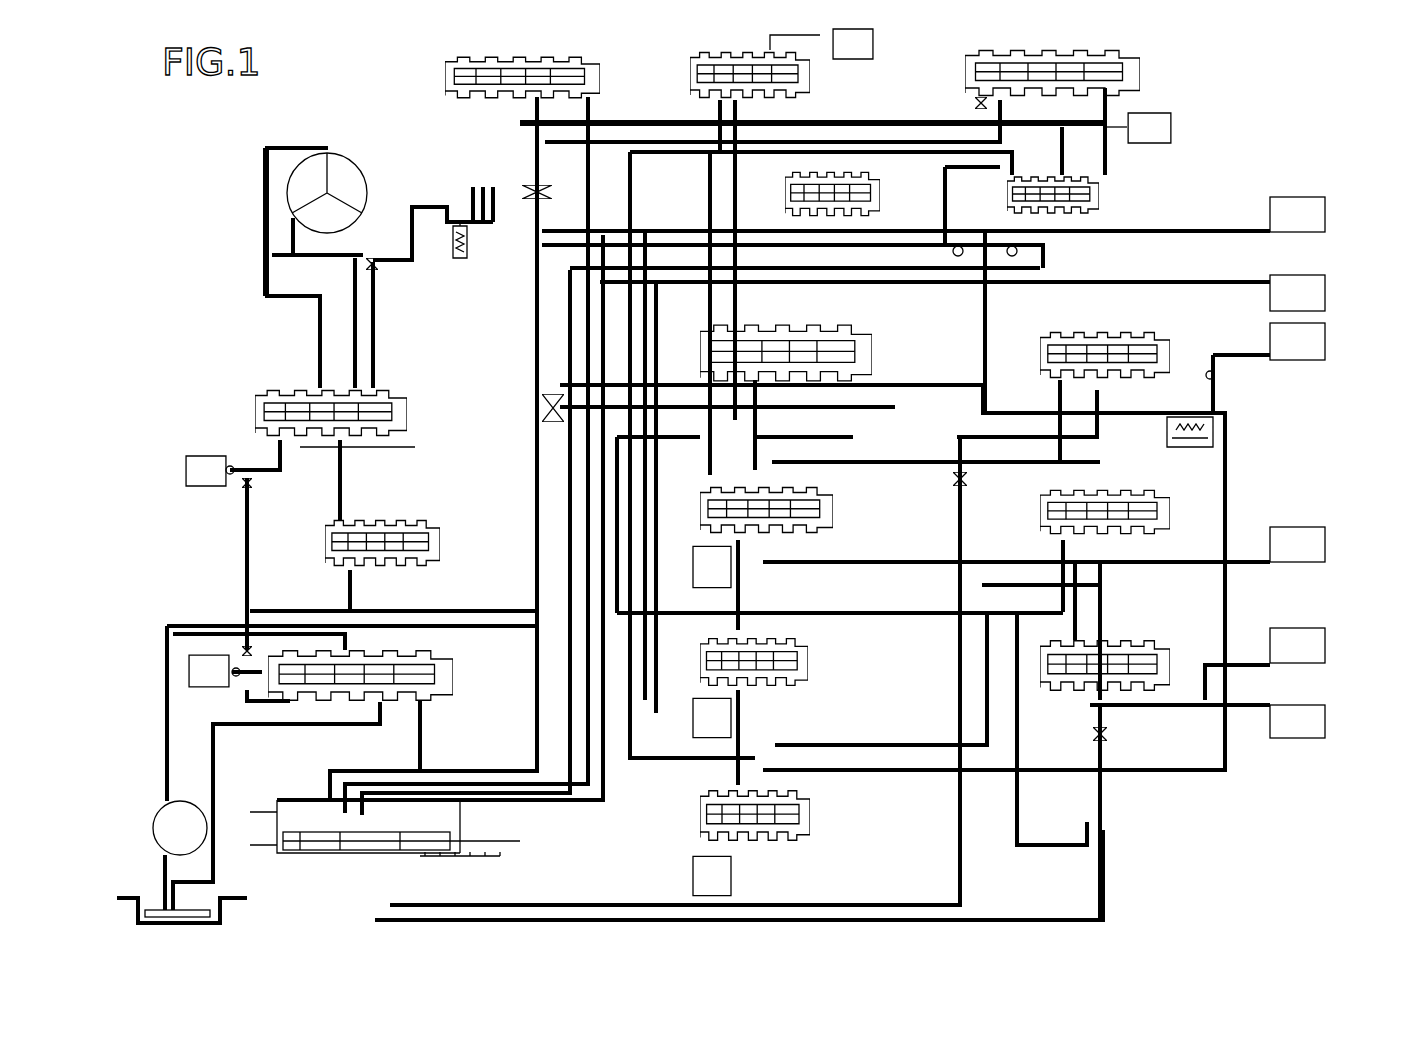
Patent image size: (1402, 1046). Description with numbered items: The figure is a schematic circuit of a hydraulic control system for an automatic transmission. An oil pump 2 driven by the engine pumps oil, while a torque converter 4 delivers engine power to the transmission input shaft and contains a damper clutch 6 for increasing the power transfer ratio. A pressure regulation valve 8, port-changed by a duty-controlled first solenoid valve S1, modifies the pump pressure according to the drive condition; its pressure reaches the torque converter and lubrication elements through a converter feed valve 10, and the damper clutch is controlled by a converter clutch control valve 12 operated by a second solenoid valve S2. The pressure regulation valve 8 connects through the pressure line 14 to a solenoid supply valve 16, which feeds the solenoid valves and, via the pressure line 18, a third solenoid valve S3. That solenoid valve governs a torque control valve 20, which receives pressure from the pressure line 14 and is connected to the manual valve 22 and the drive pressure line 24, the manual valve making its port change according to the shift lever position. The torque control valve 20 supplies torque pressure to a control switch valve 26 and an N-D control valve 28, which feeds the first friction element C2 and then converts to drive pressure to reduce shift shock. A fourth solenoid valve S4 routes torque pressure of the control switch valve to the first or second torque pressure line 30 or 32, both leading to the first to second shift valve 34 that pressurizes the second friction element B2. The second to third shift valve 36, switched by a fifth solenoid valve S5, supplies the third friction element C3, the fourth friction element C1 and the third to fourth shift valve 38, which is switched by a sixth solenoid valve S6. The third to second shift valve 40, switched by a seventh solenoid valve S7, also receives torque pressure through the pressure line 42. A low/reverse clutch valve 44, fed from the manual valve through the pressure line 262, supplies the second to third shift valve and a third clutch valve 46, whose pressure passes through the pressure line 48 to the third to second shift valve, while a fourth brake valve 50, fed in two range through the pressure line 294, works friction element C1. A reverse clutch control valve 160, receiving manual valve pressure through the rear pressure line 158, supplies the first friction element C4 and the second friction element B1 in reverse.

The oil pump 2 is at (153, 828).
The torque converter 4 is at (352, 155).
The damper clutch 6 is at (266, 184).
The pressure regulation valve 8 is at (465, 674).
The converter feed valve 10 is at (445, 538).
The converter clutch control valve 12 is at (420, 414).
The pressure line 14 is at (535, 298).
The solenoid supply valve 16 is at (606, 74).
The pressure line 18 is at (908, 120).
The torque control valve 20 is at (1150, 74).
The manual valve 22 is at (332, 860).
The drive pressure line 24 is at (590, 790).
The control switch valve 26 is at (820, 74).
The N-D control valve 28 is at (875, 192).
The first torque pressure line 30 is at (708, 163).
The second torque pressure line 32 is at (732, 196).
The first to second shift valve 34 is at (878, 347).
The second to third shift valve 36 is at (838, 508).
The third to fourth shift valve 38 is at (815, 658).
The third to second shift valve 40 is at (815, 816).
The pressure line 42 is at (660, 760).
The low/reverse clutch valve 44 is at (1178, 325).
The third clutch valve 46 is at (1180, 504).
The pressure line 48 is at (1082, 590).
The fourth brake valve 50 is at (1178, 630).
The rear pressure line 158 is at (1043, 256).
The reverse clutch control valve 160 is at (1108, 194).
The pressure line 262 is at (958, 448).
The pressure line 294 is at (1040, 918).
The first solenoid valve S1 is at (214, 671).
The second solenoid valve S2 is at (210, 471).
The third solenoid valve S3 is at (1138, 137).
The fourth solenoid valve S4 is at (853, 44).
The fifth solenoid valve S5 is at (712, 566).
The sixth solenoid valve S6 is at (712, 717).
The seventh solenoid valve S7 is at (712, 875).
The fourth friction element C1 is at (1325, 720).
The first friction element C2 is at (1325, 294).
The third friction element C3 is at (1325, 544).
The first friction element C4 is at (1325, 214).
The second friction element B1 is at (1325, 342).
The second friction element B2 is at (1325, 645).